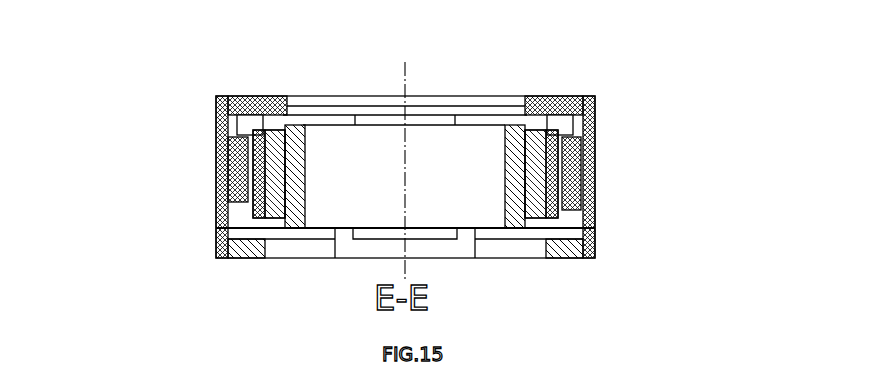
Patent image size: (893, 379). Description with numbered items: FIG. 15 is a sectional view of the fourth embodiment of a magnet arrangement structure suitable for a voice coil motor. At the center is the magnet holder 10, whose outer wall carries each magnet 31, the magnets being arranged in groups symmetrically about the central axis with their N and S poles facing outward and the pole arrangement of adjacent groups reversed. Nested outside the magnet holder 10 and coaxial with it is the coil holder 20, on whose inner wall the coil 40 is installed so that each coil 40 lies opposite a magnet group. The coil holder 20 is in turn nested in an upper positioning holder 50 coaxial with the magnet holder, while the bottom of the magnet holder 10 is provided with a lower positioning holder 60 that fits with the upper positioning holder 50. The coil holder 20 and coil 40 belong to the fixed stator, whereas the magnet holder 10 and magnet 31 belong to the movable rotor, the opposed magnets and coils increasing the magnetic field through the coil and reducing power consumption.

The magnet holder 10 is at (292, 130).
The coil holder 20 is at (234, 172).
The magnet 31 is at (254, 140).
The coil 40 is at (573, 200).
The upper positioning holder 50 is at (222, 106).
The lower positioning holder 60 is at (240, 254).